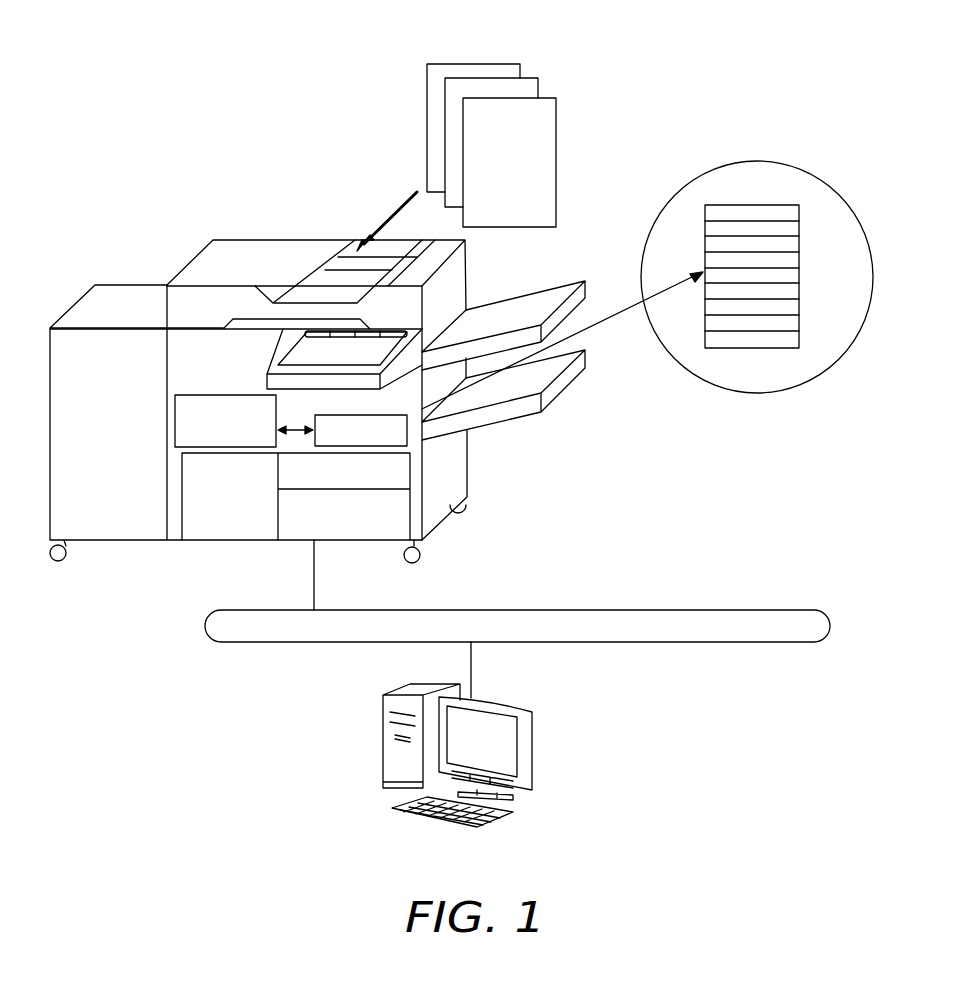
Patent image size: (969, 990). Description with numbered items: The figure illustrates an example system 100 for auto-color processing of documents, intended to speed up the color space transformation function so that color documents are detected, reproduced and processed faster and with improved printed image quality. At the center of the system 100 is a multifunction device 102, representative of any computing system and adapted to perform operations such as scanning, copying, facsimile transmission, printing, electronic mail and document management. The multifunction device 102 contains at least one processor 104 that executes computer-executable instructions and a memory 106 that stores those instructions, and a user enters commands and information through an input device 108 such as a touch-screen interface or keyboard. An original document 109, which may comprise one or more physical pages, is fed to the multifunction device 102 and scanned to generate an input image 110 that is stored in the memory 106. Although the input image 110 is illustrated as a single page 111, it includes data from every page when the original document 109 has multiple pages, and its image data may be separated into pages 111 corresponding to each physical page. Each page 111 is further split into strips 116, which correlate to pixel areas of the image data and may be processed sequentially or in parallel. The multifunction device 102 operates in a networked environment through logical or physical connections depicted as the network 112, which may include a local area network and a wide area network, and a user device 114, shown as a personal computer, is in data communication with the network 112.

The system 100 is at (150, 208).
The multifunction device 102 is at (276, 250).
The processor 104 is at (237, 395).
The memory 106 is at (368, 415).
The input device 108 is at (310, 355).
The original document 109 is at (552, 60).
The input image 110 is at (805, 383).
The page 111 is at (800, 258).
The network 112 is at (619, 610).
The user device 114 is at (513, 705).
The strip 116 is at (712, 210).